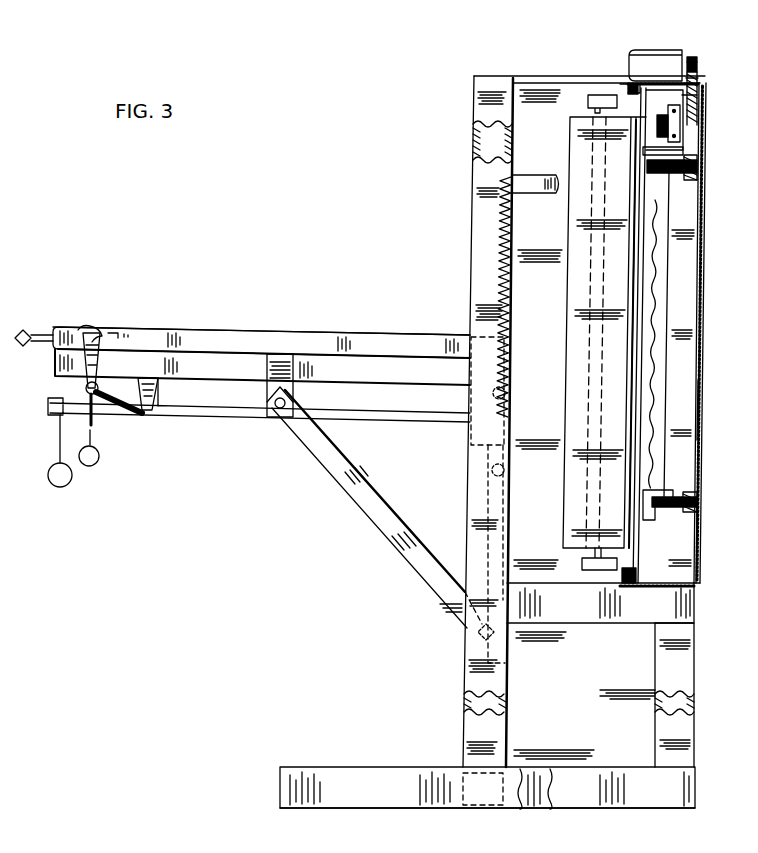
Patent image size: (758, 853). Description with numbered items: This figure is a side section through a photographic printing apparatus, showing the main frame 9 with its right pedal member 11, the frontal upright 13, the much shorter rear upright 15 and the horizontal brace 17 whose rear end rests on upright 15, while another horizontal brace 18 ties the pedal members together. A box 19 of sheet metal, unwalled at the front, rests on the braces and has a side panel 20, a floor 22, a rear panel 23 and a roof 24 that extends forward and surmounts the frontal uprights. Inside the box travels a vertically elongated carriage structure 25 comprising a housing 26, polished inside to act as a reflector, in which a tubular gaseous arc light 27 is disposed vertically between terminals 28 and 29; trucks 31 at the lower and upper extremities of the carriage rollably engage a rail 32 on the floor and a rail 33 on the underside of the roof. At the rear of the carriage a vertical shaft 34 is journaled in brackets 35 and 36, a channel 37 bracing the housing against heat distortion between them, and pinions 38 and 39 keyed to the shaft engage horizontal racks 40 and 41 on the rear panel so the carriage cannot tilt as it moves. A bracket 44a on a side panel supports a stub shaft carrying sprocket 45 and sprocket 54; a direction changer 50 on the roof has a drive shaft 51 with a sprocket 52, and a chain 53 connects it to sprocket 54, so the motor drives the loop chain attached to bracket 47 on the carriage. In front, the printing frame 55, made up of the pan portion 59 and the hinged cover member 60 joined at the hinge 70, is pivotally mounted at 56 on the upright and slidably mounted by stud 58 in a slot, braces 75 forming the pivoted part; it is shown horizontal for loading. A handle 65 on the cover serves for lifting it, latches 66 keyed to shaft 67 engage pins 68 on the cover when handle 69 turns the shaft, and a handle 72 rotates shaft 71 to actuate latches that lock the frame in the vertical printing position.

The main frame 9 is at (620, 808).
The pedal member 11 is at (388, 777).
The frontal upright 13 is at (485, 215).
The upright 15 is at (665, 731).
The horizontal brace 17 is at (590, 625).
The horizontal brace 18 is at (492, 812).
The box 19 is at (700, 546).
The side panel 20 is at (682, 277).
The floor 22 is at (660, 586).
The rear panel 23 is at (698, 408).
The roof 24 is at (532, 77).
The carriage structure 25 is at (588, 304).
The housing 26 is at (576, 278).
The tubular gaseous arc light 27 is at (592, 455).
The terminal 28 is at (596, 571).
The terminal 29 is at (587, 103).
The truck 31 is at (628, 86).
The rail 32 is at (616, 623).
The rail 33 is at (631, 87).
The shaft 34 is at (673, 318).
The bracket 35 is at (648, 154).
The bracket 36 is at (648, 516).
The channel 37 is at (655, 232).
The pinion 38 is at (690, 158).
The pinion 39 is at (667, 500).
The rack 40 is at (698, 167).
The rack 41 is at (698, 502).
The bracket 44a is at (681, 124).
The sprocket 45 is at (659, 124).
The bracket 47 is at (650, 119).
The direction changer 50 is at (671, 52).
The drive shaft 51 is at (698, 63).
The sprocket 52 is at (694, 55).
The chain 53 is at (692, 77).
The sprocket 54 is at (688, 98).
The printing frame 55 is at (347, 372).
The pivot 56 is at (476, 636).
The stud 58 is at (498, 455).
The pan portion 59 is at (258, 358).
The cover member 60 is at (206, 328).
The handle 65 is at (24, 327).
The latch 66 is at (100, 352).
The shaft 67 is at (87, 389).
The pin 68 is at (88, 335).
The handle 69 is at (100, 458).
The hinge 70 is at (506, 395).
The shaft 71 is at (214, 412).
The handle 72 is at (57, 485).
The brace 75 is at (355, 480).